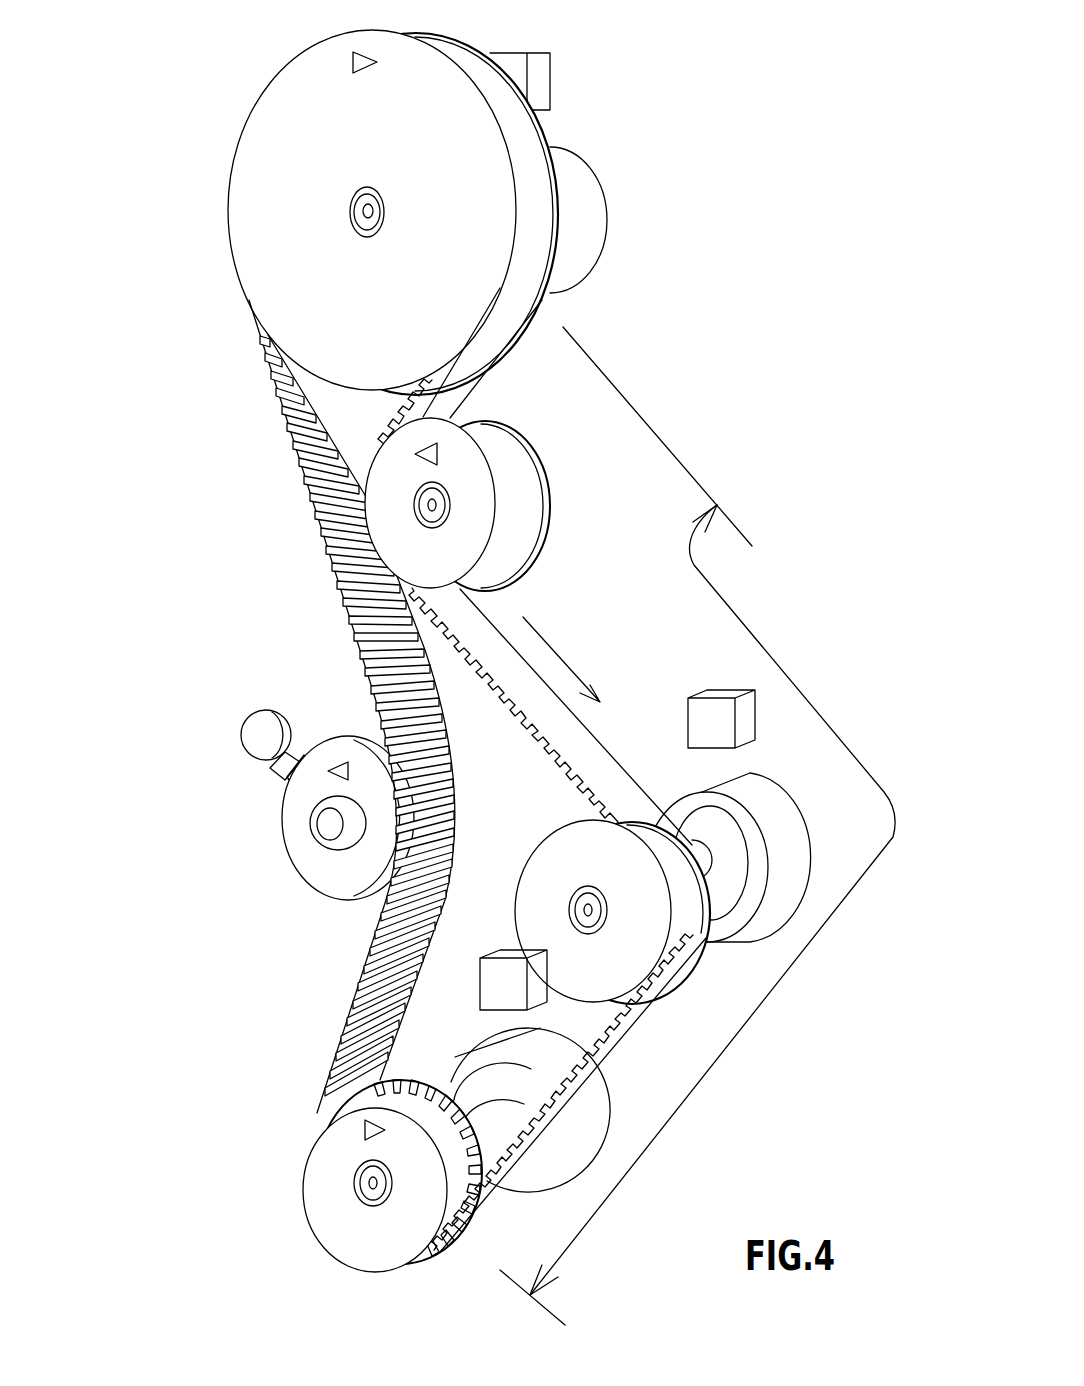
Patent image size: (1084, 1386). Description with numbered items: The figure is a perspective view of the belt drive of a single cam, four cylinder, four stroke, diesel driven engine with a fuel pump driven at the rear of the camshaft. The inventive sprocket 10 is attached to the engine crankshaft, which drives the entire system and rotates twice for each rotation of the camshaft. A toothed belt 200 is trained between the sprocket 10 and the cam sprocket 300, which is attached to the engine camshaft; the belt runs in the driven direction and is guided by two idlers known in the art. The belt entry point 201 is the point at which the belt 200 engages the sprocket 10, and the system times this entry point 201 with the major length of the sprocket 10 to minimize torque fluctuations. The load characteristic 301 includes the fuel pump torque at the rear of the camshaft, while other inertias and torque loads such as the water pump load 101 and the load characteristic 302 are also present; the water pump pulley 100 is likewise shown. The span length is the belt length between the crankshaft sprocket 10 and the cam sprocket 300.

The cam sprocket 300 is at (298, 86).
The load characteristic 301 is at (549, 78).
The toothed belt 200 is at (332, 532).
The belt entry point 201 is at (456, 1229).
The water pump pulley 100 is at (637, 930).
The water pump load 101 is at (730, 695).
The load characteristic 302 is at (492, 993).
The sprocket 10 is at (368, 1184).